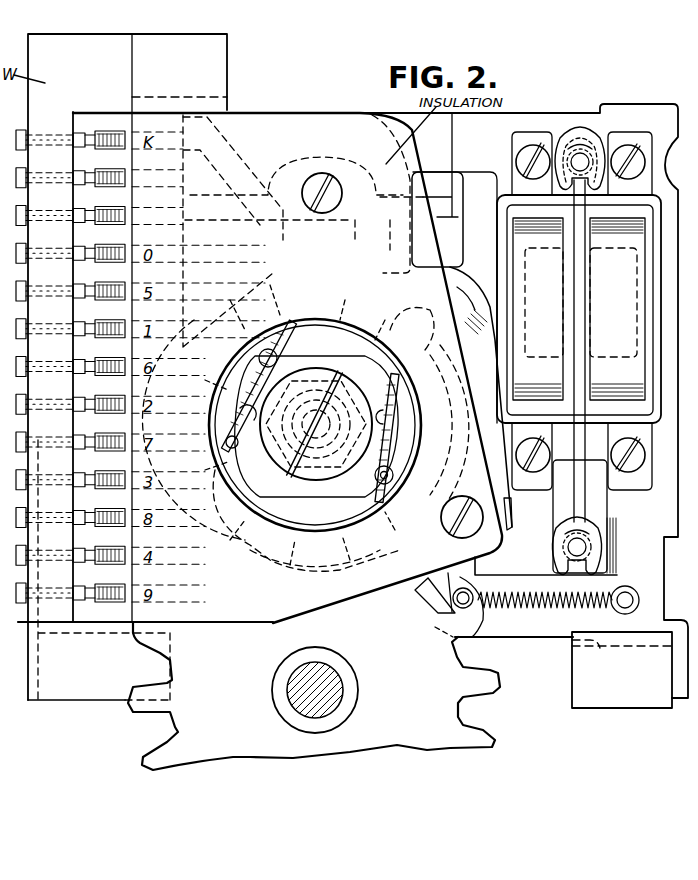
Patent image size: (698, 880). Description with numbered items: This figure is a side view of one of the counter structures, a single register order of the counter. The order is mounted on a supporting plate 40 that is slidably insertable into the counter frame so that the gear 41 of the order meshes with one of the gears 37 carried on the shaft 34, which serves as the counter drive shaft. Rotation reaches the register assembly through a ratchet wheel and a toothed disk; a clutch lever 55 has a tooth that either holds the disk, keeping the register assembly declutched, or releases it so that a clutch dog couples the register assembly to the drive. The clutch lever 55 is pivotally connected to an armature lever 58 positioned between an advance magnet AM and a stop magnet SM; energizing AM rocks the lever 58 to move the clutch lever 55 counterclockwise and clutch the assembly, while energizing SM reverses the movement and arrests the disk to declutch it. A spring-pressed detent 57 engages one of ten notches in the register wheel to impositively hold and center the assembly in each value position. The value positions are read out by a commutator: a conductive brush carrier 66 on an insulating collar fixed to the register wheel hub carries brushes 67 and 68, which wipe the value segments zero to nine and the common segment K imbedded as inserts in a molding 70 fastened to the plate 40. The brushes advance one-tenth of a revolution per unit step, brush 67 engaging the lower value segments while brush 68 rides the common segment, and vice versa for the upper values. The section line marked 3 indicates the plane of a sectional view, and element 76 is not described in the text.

The section line for FIG. 3 is at (282, 76).
The shaft 34 is at (305, 693).
The gears 37 is at (430, 727).
The supporting plate 40 is at (514, 122).
The gear 41 is at (416, 345).
The clutch lever 55 is at (523, 552).
The spring-pressed detent 57 is at (422, 597).
The armature lever 58 is at (578, 375).
The conductive brush carrier 66 is at (338, 375).
The brush 67 is at (277, 354).
The brush 68 is at (383, 493).
The molding 70 is at (257, 130).
The contact clip 76 is at (460, 254).